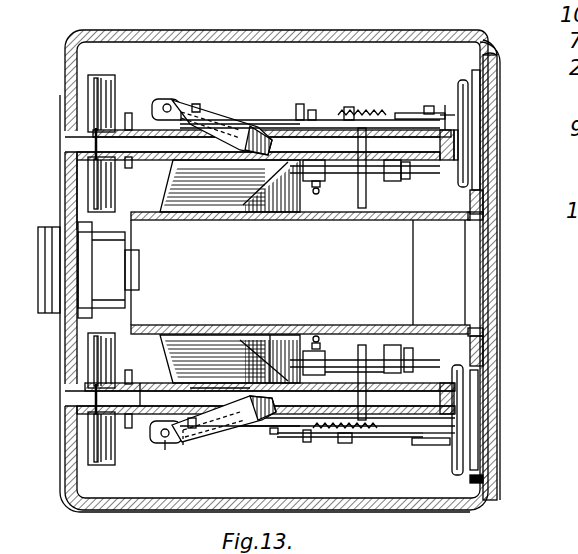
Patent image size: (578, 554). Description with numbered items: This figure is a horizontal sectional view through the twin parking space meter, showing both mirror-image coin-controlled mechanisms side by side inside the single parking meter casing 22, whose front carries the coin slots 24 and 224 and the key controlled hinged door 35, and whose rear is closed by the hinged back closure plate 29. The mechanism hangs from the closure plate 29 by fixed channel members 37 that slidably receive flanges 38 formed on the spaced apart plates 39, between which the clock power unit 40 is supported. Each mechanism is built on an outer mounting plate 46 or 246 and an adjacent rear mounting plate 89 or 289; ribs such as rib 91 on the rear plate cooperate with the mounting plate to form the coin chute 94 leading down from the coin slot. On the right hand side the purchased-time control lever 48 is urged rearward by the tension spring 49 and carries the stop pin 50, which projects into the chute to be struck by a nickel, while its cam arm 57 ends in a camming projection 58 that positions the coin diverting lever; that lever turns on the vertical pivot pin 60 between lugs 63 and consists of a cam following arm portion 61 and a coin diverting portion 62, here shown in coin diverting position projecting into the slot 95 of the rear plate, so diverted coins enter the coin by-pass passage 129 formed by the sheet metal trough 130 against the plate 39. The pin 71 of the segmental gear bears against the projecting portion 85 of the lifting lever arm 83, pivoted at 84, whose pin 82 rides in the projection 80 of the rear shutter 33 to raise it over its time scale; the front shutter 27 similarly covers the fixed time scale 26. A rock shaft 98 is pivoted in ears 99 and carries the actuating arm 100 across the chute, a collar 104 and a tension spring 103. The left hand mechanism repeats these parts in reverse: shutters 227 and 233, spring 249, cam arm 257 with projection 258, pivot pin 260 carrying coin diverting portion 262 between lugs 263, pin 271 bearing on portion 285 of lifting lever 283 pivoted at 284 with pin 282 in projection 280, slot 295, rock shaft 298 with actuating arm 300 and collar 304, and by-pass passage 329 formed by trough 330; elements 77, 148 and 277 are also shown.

The parking meter casing 22 is at (488, 38).
The coin slot 24 is at (72, 396).
The fixed time scale 26 is at (118, 350).
The shutter or signal flag 27 is at (106, 466).
The back closure plate 29 is at (490, 262).
The auxiliary time interval shutter 33 is at (470, 478).
The key controlled hinged door 35 is at (66, 172).
The fixed channel member 37 is at (480, 198).
The flange 38 is at (484, 216).
The spaced apart plate 39 is at (434, 215).
The power unit 40 is at (398, 264).
The outer mounting plate 46 is at (465, 418).
The purchased-time control lever 48 is at (382, 422).
The tension spring 49 is at (376, 430).
The stop pin 50 is at (362, 400).
The cam arm 57 is at (262, 428).
The camming projection 58 is at (183, 445).
The vertical pivot pin 60 is at (166, 438).
The cam following arm portion 61 is at (192, 430).
The coin diverting portion 62 is at (228, 420).
The lug 63 is at (164, 446).
The pin 71 is at (307, 443).
The tab 77 is at (128, 430).
The projection 80 is at (444, 446).
The pin 82 is at (422, 448).
The lifting lever arm 83 is at (405, 439).
The pivot 84 is at (346, 444).
The projecting portion 85 is at (276, 436).
The rear mounting plate 89 is at (462, 388).
The rib 91 is at (468, 404).
The coin chute 94 is at (150, 394).
The slot 95 is at (190, 388).
The rock shaft 98 is at (352, 365).
The ear 99 is at (413, 370).
The actuating arm 100 is at (396, 372).
The tension spring 103 is at (318, 186).
The collar 104 is at (335, 362).
The coin by-pass passage 129 is at (178, 330).
The sheet metal trough 130 is at (264, 332).
The plate 148 is at (386, 126).
The coin slot 224 is at (72, 141).
The shutter or signal flag 227 is at (95, 73).
The auxiliary time interval shutter 233 is at (468, 128).
The outer mounting plate 246 is at (476, 112).
The tension spring 249 is at (370, 115).
The cam arm 257 is at (262, 122).
The camming projection 258 is at (198, 106).
The vertical pivot pin 260 is at (174, 104).
The coin diverting portion 262 is at (222, 125).
The lug 263 is at (167, 104).
The pin 271 is at (312, 110).
The tab 277 is at (129, 113).
The projection 280 is at (446, 105).
The pin 282 is at (429, 106).
The lifting lever arm 283 is at (400, 112).
The pivot 284 is at (349, 107).
The projecting portion 285 is at (298, 104).
The rear mounting plate 289 is at (458, 152).
The slot 295 is at (212, 165).
The rock shaft 298 is at (362, 172).
The actuating arm 300 is at (392, 172).
The collar 304 is at (330, 210).
The coin by-pass passage 329 is at (228, 208).
The sheet metal trough 330 is at (284, 222).